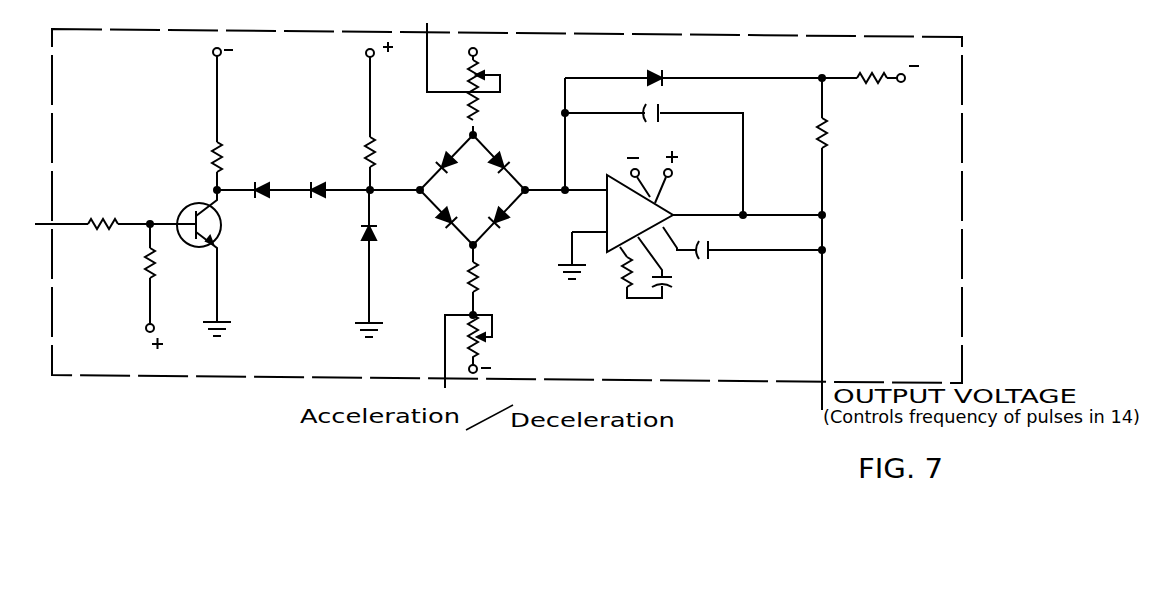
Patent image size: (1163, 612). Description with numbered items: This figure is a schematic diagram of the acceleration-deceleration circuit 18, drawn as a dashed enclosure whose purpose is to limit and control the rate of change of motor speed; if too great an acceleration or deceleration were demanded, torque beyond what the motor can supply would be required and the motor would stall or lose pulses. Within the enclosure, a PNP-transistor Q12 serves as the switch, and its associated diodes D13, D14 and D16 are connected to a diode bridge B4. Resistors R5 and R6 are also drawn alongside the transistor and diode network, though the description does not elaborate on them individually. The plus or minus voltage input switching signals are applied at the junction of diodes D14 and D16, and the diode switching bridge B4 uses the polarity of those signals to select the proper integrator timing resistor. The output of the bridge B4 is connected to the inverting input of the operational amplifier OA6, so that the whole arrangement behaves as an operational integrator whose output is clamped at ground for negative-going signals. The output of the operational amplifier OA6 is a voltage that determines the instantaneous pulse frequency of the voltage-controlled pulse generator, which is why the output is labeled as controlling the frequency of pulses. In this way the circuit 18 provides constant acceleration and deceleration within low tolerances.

The acceleration-deceleration circuit 18 is at (52, 65).
The resistor R5 is at (212, 161).
The diode D13 is at (255, 183).
The diode D14 is at (310, 182).
The resistor R6 is at (377, 163).
The diode D16 is at (377, 233).
The PNP-transistor Q12 is at (212, 230).
The diode bridge B4 is at (457, 240).
The operational amplifier OA6 is at (656, 209).